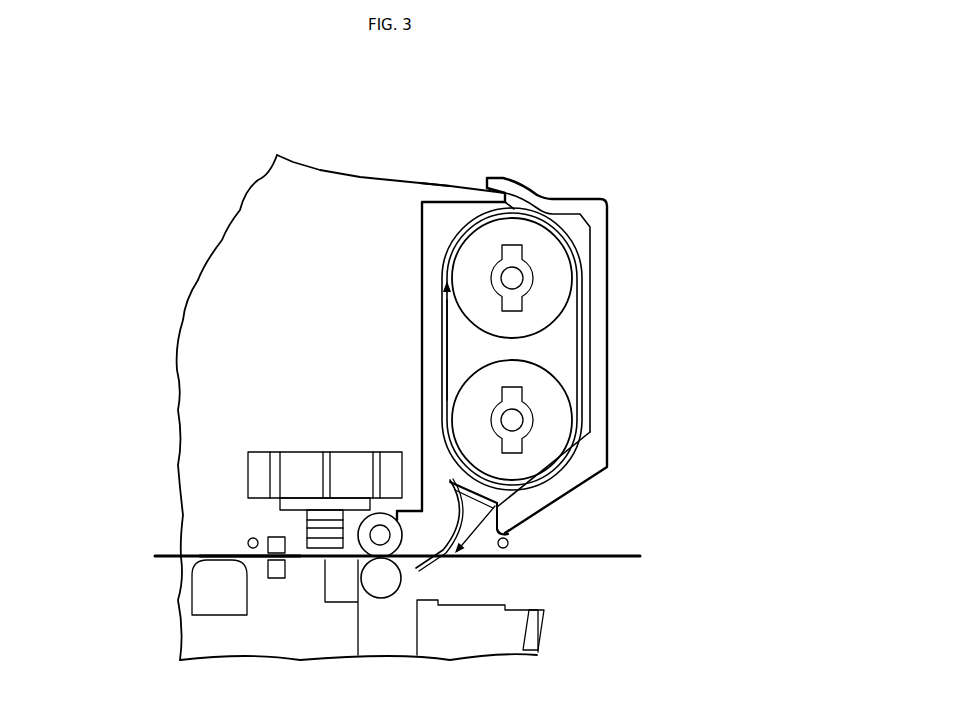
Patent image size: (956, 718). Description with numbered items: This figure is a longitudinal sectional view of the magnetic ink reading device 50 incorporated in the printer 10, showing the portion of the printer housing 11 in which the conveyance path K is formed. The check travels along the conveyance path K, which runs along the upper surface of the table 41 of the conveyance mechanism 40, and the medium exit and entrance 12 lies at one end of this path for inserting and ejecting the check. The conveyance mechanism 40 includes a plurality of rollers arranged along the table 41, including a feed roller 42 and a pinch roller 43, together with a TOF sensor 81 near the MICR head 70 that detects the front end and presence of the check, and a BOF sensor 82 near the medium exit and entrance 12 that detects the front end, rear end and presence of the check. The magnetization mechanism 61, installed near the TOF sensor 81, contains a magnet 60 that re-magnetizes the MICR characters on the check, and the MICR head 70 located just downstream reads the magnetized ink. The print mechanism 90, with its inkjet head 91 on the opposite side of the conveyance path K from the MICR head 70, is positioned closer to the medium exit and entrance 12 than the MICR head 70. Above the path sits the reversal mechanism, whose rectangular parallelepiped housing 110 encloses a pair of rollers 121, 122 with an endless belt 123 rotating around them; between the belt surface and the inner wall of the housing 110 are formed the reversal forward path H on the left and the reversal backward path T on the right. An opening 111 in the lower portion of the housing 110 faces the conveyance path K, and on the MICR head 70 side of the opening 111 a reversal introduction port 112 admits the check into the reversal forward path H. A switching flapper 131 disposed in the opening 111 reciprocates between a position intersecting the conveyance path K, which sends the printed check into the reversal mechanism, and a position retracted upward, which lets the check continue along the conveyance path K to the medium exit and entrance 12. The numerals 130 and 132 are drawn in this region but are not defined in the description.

The printer 10 is at (435, 180).
The housing 11 is at (360, 192).
The medium exit and entrance 12 is at (573, 558).
The conveyance mechanism 40 is at (343, 566).
The table 41 is at (537, 561).
The feed roller 42 is at (380, 528).
The pinch roller 43 is at (383, 580).
The magnetic ink reading device 50 is at (212, 600).
The magnet 60 is at (287, 578).
The magnetization mechanism 61 is at (258, 566).
The MICR head 70 is at (222, 605).
The TOF sensor 81 is at (250, 539).
The BOF sensor 82 is at (509, 543).
The print mechanism 90 is at (300, 462).
The inkjet head 91 is at (310, 528).
The housing 110 is at (600, 288).
The opening 111 is at (513, 532).
The reversal introduction port 112 is at (445, 507).
The roller 121 is at (553, 410).
The roller 122 is at (545, 306).
The endless belt 123 is at (583, 340).
The transfer nip 130 is at (470, 548).
The switching flapper 131 is at (450, 548).
The transfer guide end 132 is at (486, 556).
The reversal forward path H is at (437, 338).
The conveyance path K is at (298, 558).
The reversal backward path T is at (585, 378).